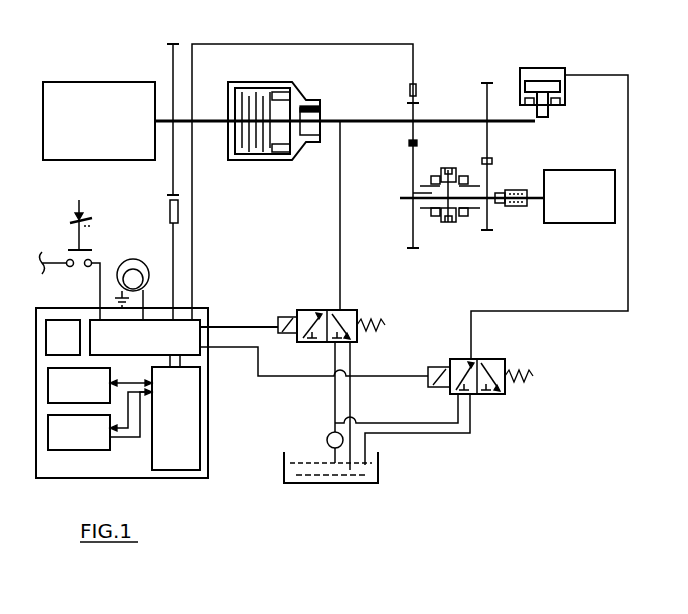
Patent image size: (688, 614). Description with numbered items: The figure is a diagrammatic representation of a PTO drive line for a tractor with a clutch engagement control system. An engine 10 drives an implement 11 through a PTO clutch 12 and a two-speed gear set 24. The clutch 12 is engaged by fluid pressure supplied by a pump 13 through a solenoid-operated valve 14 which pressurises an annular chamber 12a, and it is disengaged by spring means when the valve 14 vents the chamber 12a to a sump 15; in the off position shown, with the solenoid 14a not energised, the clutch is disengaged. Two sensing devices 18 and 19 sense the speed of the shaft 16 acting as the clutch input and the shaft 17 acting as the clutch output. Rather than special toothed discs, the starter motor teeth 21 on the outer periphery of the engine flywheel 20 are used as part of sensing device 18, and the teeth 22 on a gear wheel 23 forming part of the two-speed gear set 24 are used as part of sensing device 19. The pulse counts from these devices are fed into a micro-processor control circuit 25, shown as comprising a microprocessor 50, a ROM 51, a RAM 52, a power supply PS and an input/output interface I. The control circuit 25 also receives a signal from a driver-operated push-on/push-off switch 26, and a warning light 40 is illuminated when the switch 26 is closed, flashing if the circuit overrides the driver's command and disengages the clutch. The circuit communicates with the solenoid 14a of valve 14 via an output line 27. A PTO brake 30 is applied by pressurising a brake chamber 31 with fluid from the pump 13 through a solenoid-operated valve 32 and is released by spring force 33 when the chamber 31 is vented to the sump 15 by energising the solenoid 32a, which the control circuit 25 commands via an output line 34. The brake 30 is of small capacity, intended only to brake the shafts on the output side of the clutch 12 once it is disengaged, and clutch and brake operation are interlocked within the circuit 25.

The engine 10 is at (99, 121).
The implement 11 is at (579, 196).
The PTO clutch 12 is at (253, 76).
The annular chamber 12a is at (296, 93).
The pump 13 is at (328, 438).
The solenoid-operated valve 14 is at (316, 310).
The solenoid 14a is at (280, 316).
The sump 15 is at (286, 455).
The shaft 16 is at (204, 118).
The shaft 17 is at (377, 118).
The sensing device 18 is at (166, 213).
The sensing device 19 is at (418, 81).
The engine flywheel 20 is at (171, 55).
The starter motor teeth 21 is at (171, 194).
The teeth 22 is at (418, 143).
The gear wheel 23 is at (418, 103).
The two-speed gear set 24 is at (437, 153).
The micro-processor control circuit 25 is at (212, 397).
The push-on/push-off switch 26 is at (79, 232).
The output line 27 is at (244, 326).
The PTO brake 30 is at (566, 86).
The brake chamber 31 is at (562, 68).
The solenoid-operated valve 32 is at (473, 364).
The solenoid 32a is at (439, 367).
The spring force 33 is at (554, 107).
The output line 34 is at (278, 378).
The warning light 40 is at (133, 262).
The microprocessor 50 is at (176, 418).
The ROM 51 is at (100, 385).
The RAM 52 is at (100, 419).